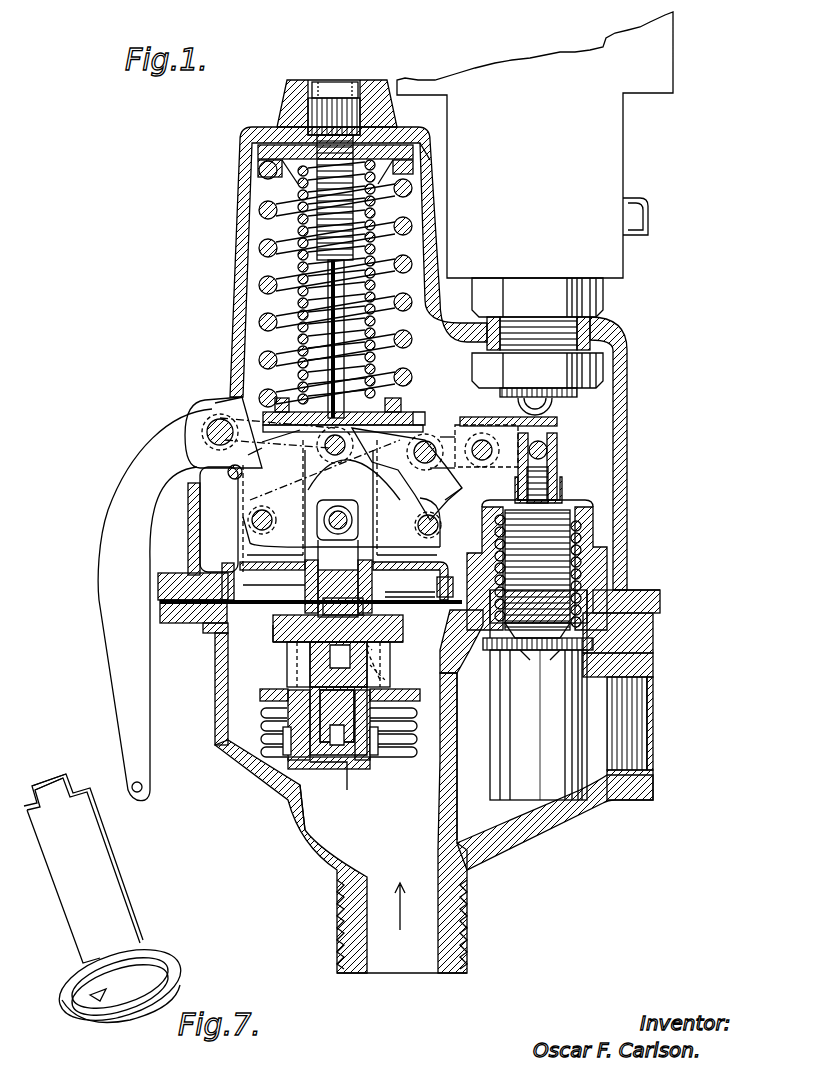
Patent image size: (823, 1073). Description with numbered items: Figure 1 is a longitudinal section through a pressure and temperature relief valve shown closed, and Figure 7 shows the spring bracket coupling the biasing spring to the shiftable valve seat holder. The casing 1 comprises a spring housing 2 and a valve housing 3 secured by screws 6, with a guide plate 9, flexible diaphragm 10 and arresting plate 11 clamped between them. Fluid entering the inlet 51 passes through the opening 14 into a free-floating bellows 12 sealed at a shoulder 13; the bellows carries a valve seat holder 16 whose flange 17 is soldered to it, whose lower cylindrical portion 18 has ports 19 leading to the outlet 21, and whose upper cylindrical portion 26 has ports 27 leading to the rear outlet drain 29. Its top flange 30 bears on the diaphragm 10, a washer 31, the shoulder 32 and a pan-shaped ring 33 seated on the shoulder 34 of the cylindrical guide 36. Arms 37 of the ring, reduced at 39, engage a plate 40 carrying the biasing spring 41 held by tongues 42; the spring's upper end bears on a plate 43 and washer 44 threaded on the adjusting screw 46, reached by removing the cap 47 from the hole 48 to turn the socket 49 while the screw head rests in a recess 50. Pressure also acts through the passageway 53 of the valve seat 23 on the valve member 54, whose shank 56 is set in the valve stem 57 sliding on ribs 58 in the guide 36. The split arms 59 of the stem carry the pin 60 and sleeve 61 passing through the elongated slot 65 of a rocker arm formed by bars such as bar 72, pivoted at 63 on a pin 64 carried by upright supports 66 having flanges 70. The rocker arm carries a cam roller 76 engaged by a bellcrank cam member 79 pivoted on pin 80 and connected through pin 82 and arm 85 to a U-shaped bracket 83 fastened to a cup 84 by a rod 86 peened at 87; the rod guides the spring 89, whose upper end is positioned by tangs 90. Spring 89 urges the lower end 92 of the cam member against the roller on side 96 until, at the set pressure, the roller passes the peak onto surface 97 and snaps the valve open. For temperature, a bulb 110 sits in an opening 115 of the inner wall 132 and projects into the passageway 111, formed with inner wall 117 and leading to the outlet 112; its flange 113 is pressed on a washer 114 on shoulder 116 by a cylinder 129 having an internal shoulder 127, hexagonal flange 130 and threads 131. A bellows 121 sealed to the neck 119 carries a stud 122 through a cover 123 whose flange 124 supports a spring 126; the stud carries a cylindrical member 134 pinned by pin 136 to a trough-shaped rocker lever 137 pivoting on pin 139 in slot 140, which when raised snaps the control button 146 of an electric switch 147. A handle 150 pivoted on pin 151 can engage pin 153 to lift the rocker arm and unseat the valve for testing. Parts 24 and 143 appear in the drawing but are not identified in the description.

In FIG. 1, the casing 1 is at (232, 232).
In FIG. 1, the spring housing 2 is at (233, 306).
In FIG. 1, the valve housing 3 is at (215, 712).
In FIG. 1, the screws 6 is at (190, 562).
In FIG. 1, the guide plate 9 is at (243, 563).
In FIG. 1, the flexible diaphragm 10 is at (272, 576).
In FIG. 1, the arresting plate 11 is at (258, 590).
In FIG. 1, the flexible bellows 12 is at (266, 710).
In FIG. 1, the shoulder 13 is at (275, 760).
In FIG. 1, the inlet 14 is at (310, 785).
In FIG. 1, the valve seat holder 16 is at (288, 648).
In FIG. 1, the flange 17 is at (265, 694).
In FIG. 1, the lower cylindrical portion 18 is at (347, 790).
In FIG. 1, the ports 19 is at (283, 735).
In FIG. 1, the outlet 21 is at (395, 682).
In FIG. 1, the valve seat 23 is at (420, 693).
In FIG. 1, the spring 24 is at (417, 712).
In FIG. 1, the upper cylindrical portion 26 is at (367, 645).
In FIG. 1, the ports 27 is at (297, 655).
In FIG. 1, the outlet drain 29 is at (385, 653).
In FIG. 1, the flange 30 is at (403, 620).
In FIG. 1, the washer 31 is at (278, 618).
In FIG. 1, the shoulder 32 is at (305, 588).
In FIG. 1, the pan-shaped ring 33 is at (395, 596).
In FIG. 7, the pan-shaped ring 33 is at (180, 977).
In FIG. 1, the shoulder 34 is at (420, 588).
In FIG. 1, the cylindrical guide 36 is at (410, 581).
In FIG. 7, the arms 37 is at (115, 895).
In FIG. 7, the reduced portions 39 is at (63, 790).
In FIG. 1, the plate 40 is at (421, 410).
In FIG. 1, the biasing spring 41 is at (260, 283).
In FIG. 1, the tongues 42 is at (290, 410).
In FIG. 1, the plate 43 is at (425, 152).
In FIG. 1, the washer 44 is at (258, 153).
In FIG. 1, the adjusting screw 46 is at (262, 222).
In FIG. 1, the cap 47 is at (342, 85).
In FIG. 1, the hole 48 is at (325, 84).
In FIG. 1, the socket 49 is at (292, 112).
In FIG. 1, the recess 50 is at (420, 82).
In FIG. 1, the inlet 51 is at (412, 975).
In FIG. 1, the passageway 53 is at (312, 702).
In FIG. 1, the valve member 54 is at (345, 683).
In FIG. 1, the shank 56 is at (310, 665).
In FIG. 1, the valve stem 57 is at (290, 628).
In FIG. 1, the transverse ribs 58 is at (345, 547).
In FIG. 1, the arms 59 is at (330, 550).
In FIG. 1, the pin 60 is at (317, 521).
In FIG. 1, the sleeve 61 is at (326, 511).
In FIG. 1, the pivot 63 is at (251, 519).
In FIG. 1, the pin 64 is at (250, 526).
In FIG. 1, the elongated slot 65 is at (360, 520).
In FIG. 1, the upright support 66 is at (292, 468).
In FIG. 1, the flange 70 is at (440, 546).
In FIG. 1, the bar 72 is at (248, 503).
In FIG. 1, the cam roller 76 is at (439, 528).
In FIG. 1, the cam member 79 is at (418, 491).
In FIG. 1, the pin 80 is at (432, 440).
In FIG. 1, the pin 82 is at (325, 462).
In FIG. 1, the U-shaped bracket 83 is at (372, 418).
In FIG. 1, the cup 84 is at (388, 398).
In FIG. 1, the arm 85 is at (355, 468).
In FIG. 1, the rod 86 is at (360, 286).
In FIG. 1, the peaned end 87 is at (318, 450).
In FIG. 1, the spring 89 is at (312, 266).
In FIG. 1, the tangs 90 is at (285, 182).
In FIG. 1, the lower end 92 is at (362, 526).
In FIG. 1, the side 96 is at (440, 522).
In FIG. 1, the upper side 97 is at (430, 512).
In FIG. 1, the bulb 110 is at (497, 800).
In FIG. 1, the passageway 111 is at (560, 835).
In FIG. 1, the outlet 112 is at (648, 698).
In FIG. 1, the flange 113 is at (580, 655).
In FIG. 1, the washer 114 is at (480, 660).
In FIG. 1, the opening 115 is at (600, 645).
In FIG. 1, the shoulder 116 is at (495, 672).
In FIG. 1, the inner wall 117 is at (447, 760).
In FIG. 1, the neck 119 is at (550, 650).
In FIG. 1, the expansible bellows 121 is at (593, 495).
In FIG. 1, the threaded extension 122 is at (550, 492).
In FIG. 1, the cover 123 is at (562, 494).
In FIG. 1, the flange 124 is at (620, 612).
In FIG. 1, the spring 126 is at (600, 525).
In FIG. 1, the internal shoulder 127 is at (600, 512).
In FIG. 1, the cylinder 129 is at (605, 540).
In FIG. 1, the hexagonal flange 130 is at (607, 552).
In FIG. 1, the external threads 131 is at (610, 590).
In FIG. 1, the inner wall 132 is at (615, 598).
In FIG. 1, the cylindrical member 134 is at (557, 470).
In FIG. 1, the pin 136 is at (557, 440).
In FIG. 1, the rocker lever 137 is at (558, 420).
In FIG. 1, the pin 139 is at (482, 440).
In FIG. 1, the slot 140 is at (497, 440).
In FIG. 1, the link 143 is at (445, 466).
In FIG. 1, the control button 146 is at (613, 395).
In FIG. 1, the electric switch 147 is at (620, 258).
In FIG. 1, the handle 150 is at (125, 707).
In FIG. 1, the pin 151 is at (214, 420).
In FIG. 1, the pin 153 is at (228, 468).